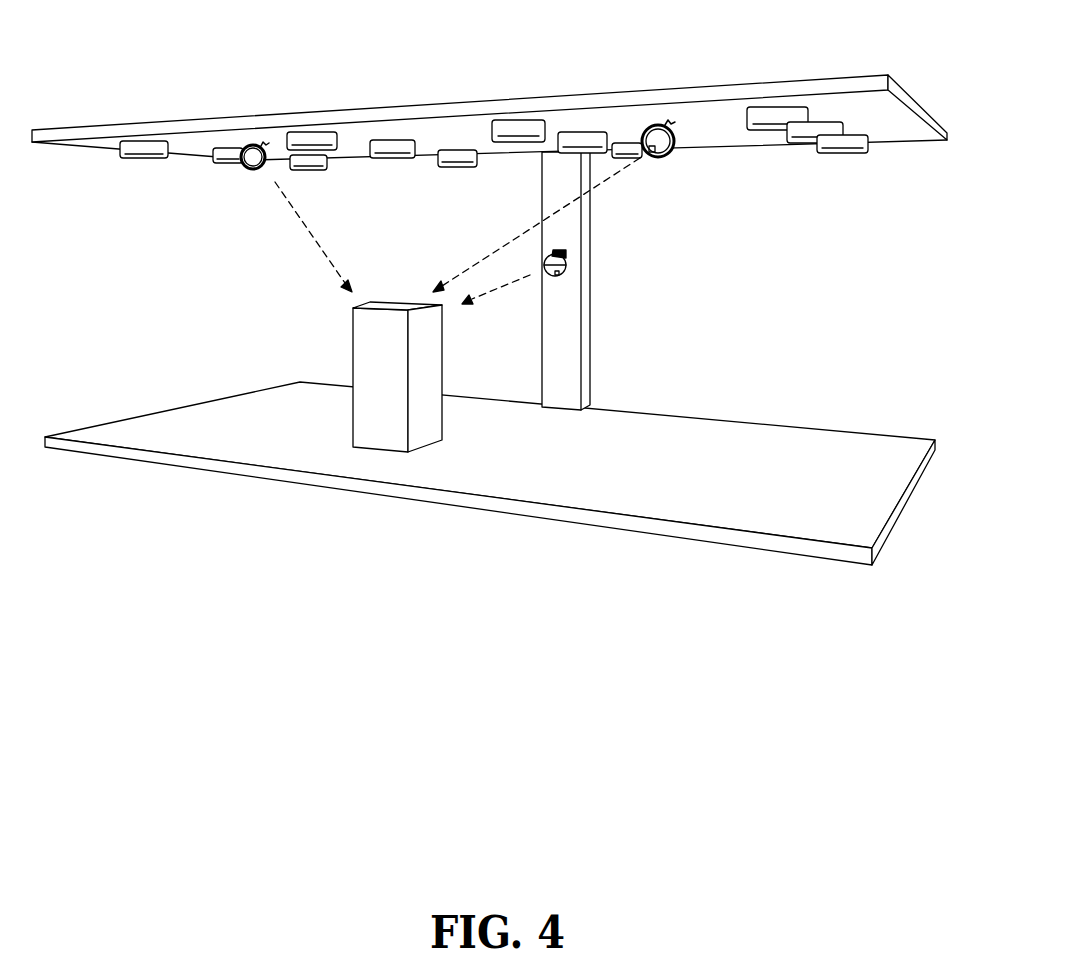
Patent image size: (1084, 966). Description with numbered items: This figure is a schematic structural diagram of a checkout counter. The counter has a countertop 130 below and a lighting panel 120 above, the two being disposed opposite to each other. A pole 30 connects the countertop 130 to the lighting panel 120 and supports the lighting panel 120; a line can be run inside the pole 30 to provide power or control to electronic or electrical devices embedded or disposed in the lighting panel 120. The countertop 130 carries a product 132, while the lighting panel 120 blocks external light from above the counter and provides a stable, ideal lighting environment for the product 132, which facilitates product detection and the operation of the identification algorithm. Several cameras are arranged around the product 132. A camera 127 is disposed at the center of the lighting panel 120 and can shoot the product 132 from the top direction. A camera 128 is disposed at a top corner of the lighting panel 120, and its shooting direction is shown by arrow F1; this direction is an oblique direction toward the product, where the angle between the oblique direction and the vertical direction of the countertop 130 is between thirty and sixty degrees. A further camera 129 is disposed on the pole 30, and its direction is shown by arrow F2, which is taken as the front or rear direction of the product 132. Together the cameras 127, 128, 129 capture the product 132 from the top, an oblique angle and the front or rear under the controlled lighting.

The lighting panel 120 is at (778, 80).
The camera 127 is at (662, 158).
The camera 128 is at (253, 170).
The camera 129 is at (567, 267).
The pole 30 is at (582, 335).
The countertop 130 is at (777, 435).
The product 132 is at (437, 413).
The arrow F1 is at (317, 242).
The arrow F2 is at (477, 300).